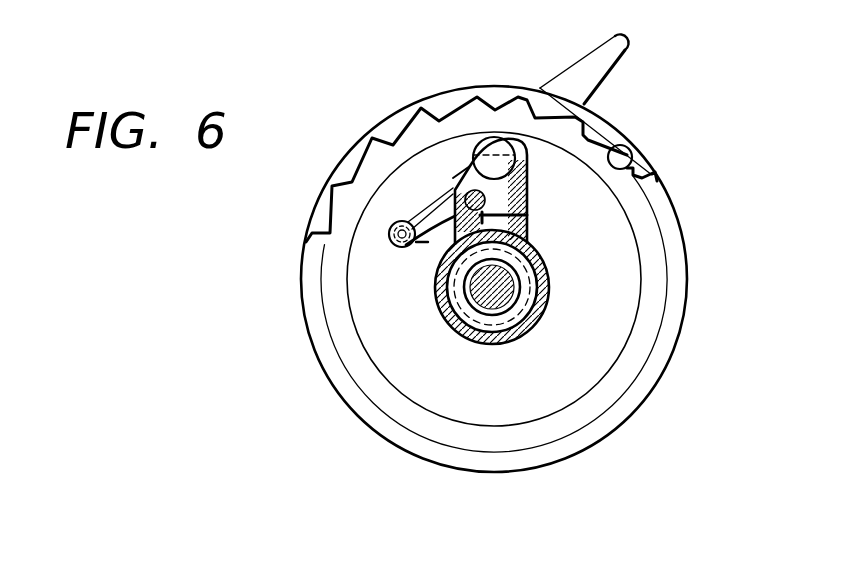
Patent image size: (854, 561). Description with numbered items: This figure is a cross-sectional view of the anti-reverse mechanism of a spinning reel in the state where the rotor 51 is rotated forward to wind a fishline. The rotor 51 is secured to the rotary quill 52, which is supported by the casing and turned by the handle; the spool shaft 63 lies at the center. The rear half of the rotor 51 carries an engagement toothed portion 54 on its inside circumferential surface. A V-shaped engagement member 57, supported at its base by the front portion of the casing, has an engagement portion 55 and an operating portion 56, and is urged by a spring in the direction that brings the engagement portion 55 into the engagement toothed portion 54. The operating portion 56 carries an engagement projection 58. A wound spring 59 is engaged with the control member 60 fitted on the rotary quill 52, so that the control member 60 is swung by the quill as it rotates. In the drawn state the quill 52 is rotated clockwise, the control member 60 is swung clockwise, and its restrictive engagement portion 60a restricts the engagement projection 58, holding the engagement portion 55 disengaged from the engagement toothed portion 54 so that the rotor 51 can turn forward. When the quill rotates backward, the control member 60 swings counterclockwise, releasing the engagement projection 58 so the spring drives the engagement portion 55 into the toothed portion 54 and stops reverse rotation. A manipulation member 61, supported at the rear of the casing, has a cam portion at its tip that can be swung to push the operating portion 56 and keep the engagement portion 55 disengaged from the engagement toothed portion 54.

The rotor 51 is at (654, 166).
The rotary quill 52 is at (450, 266).
The engagement toothed portion 54 is at (640, 158).
The engagement portion 55 is at (470, 178).
The operating portion 56 is at (535, 196).
The V-shaped engagement member 57 is at (418, 204).
The engagement projection 58 is at (520, 195).
The wound spring 59 is at (545, 240).
The control member 60 is at (550, 292).
The restrictive engagement portion 60a is at (440, 205).
The manipulation member 61 is at (580, 75).
The spool shaft 63 is at (478, 308).